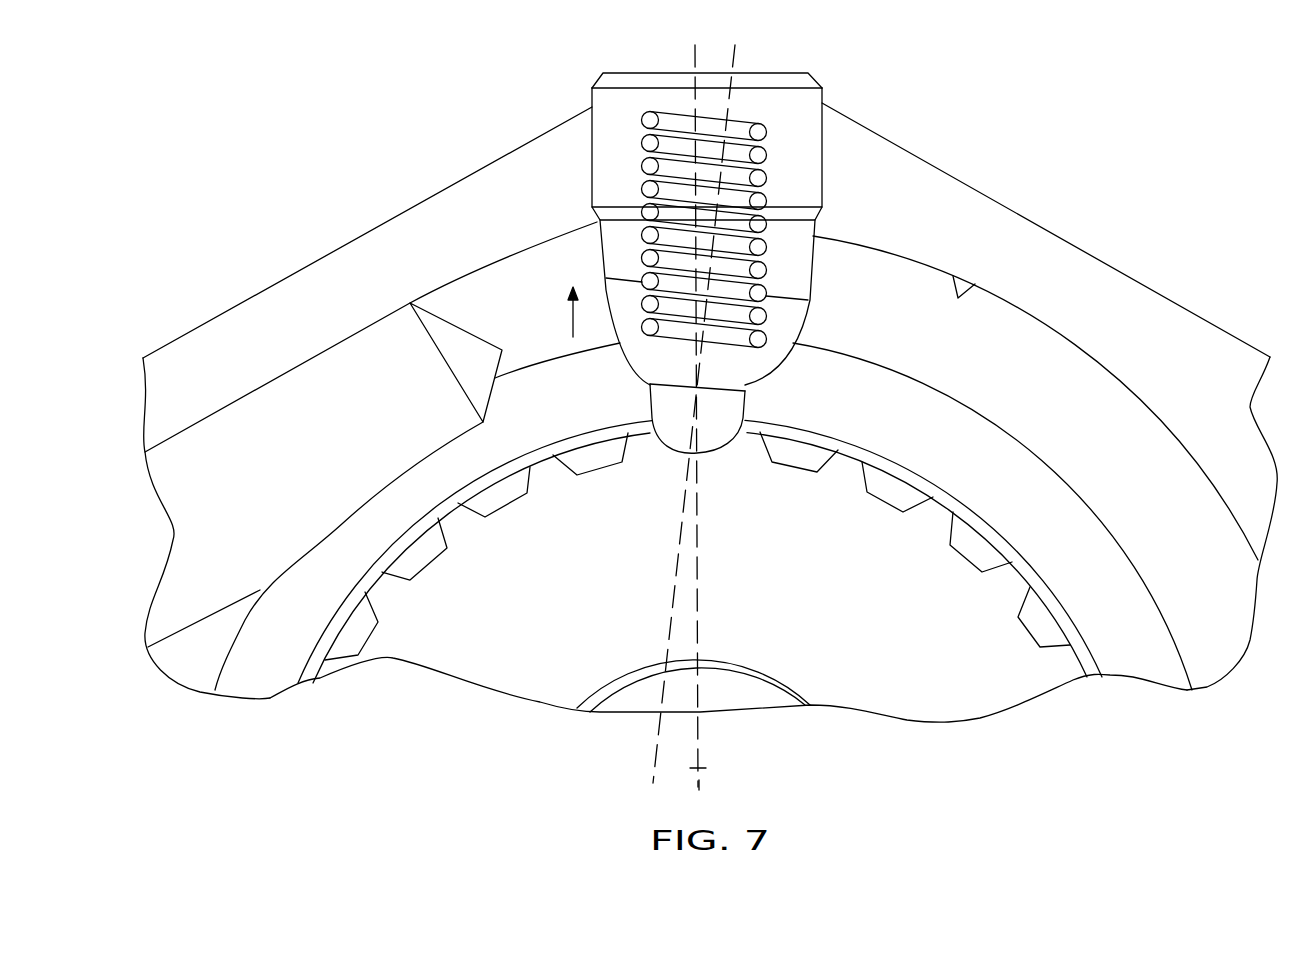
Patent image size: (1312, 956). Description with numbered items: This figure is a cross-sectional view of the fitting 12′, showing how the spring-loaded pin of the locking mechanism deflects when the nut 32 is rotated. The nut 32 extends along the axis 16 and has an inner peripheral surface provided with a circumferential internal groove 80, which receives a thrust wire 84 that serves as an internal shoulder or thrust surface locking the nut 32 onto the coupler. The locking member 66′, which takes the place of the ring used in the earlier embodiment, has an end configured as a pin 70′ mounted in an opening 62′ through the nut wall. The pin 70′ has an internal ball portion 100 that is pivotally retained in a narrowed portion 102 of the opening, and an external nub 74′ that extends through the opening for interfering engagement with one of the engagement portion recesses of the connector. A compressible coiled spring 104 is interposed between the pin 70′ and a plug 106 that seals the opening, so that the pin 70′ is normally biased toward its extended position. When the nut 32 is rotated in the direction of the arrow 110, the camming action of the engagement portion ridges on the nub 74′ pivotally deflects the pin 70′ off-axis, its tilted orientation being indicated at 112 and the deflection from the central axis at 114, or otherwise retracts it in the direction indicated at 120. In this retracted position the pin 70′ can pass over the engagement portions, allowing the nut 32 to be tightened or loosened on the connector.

The fitting assembly 12′ is at (1118, 150).
The axis 16 is at (700, 766).
The nut 32 is at (1225, 332).
The cam surface 62′ is at (817, 222).
The pawl housing cap 66′ is at (890, 65).
The pin 70′ is at (805, 323).
The external nub 74′ is at (666, 450).
The internal groove 80 is at (967, 290).
The thrust wire 84 is at (468, 347).
The internal ball portion 100 is at (612, 335).
The narrowed portion 102 is at (775, 366).
The compressible spring 104 is at (597, 222).
The plug 106 is at (642, 72).
The arrow 110 is at (730, 691).
The tilted axis 112 is at (656, 744).
The off-axis deflection 114 is at (700, 785).
The retraction direction 120 is at (570, 318).